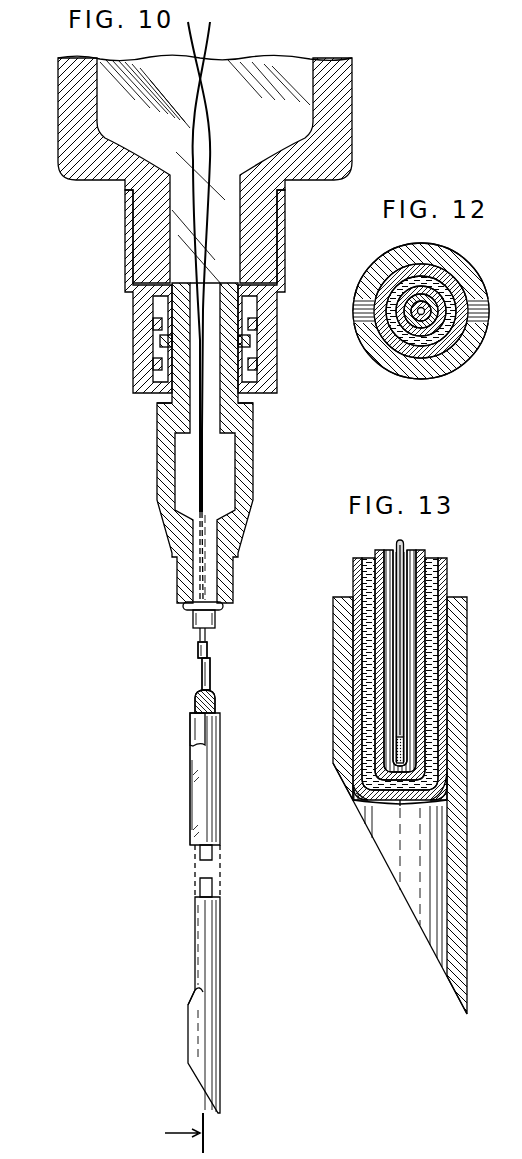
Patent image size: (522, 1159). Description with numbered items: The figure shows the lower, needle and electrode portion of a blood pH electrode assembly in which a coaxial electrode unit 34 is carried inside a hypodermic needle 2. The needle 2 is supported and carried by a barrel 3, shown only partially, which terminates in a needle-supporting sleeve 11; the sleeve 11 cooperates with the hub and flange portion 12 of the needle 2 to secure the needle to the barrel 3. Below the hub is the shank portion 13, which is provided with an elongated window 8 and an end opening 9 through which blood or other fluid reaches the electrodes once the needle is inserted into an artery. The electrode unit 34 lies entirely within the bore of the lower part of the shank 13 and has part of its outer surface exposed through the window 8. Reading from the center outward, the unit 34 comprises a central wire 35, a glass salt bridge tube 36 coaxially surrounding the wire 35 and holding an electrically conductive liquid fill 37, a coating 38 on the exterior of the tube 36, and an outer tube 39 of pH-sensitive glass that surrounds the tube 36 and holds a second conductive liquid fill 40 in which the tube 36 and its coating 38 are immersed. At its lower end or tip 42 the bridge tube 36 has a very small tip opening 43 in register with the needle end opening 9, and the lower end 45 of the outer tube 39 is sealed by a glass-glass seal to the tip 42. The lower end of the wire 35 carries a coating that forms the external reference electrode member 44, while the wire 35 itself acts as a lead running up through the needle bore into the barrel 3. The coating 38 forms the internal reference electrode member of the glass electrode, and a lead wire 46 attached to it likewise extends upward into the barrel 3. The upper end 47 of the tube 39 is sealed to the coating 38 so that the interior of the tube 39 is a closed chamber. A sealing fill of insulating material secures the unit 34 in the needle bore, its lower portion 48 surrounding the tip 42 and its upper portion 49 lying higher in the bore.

In FIG. 10, the hypodermic needle 2 is at (110, 610).
In FIG. 10, the barrel portion 3 is at (73, 111).
In FIG. 10, the window 8 is at (193, 796).
In FIG. 12, the window 8 is at (372, 330).
In FIG. 13, the end opening 9 is at (422, 918).
In FIG. 10, the needle-supporting sleeve 11 is at (133, 342).
In FIG. 10, the hub and flange portion 12 is at (178, 519).
In FIG. 10, the shank portion 13 is at (214, 796).
In FIG. 12, the shank portion 13 is at (457, 268).
In FIG. 13, the shank portion 13 is at (455, 722).
In FIG. 10, the coaxial electrode unit 34 is at (219, 684).
In FIG. 10, the central wire 35 is at (212, 35).
In FIG. 12, the central wire 35 is at (405, 326).
In FIG. 13, the central wire 35 is at (397, 543).
In FIG. 10, the glass tube 36 is at (210, 650).
In FIG. 12, the glass tube 36 is at (440, 331).
In FIG. 13, the glass tube 36 is at (416, 578).
In FIG. 12, the electrically conductive liquid fill 37 is at (421, 320).
In FIG. 13, the electrically conductive liquid fill 37 is at (406, 563).
In FIG. 10, the coating 38 is at (202, 675).
In FIG. 12, the coating 38 is at (463, 346).
In FIG. 13, the coating 38 is at (424, 590).
In FIG. 10, the outer glass tube 39 is at (196, 700).
In FIG. 12, the outer glass tube 39 is at (465, 300).
In FIG. 13, the outer glass tube 39 is at (443, 682).
In FIG. 12, the electrically conductive liquid fill 40 is at (458, 321).
In FIG. 13, the electrically conductive liquid fill 40 is at (432, 641).
In FIG. 13, the lower end or tip 42 is at (440, 803).
In FIG. 13, the tip opening 43 is at (400, 805).
In FIG. 13, the external reference electrode member 44 is at (396, 757).
In FIG. 13, the lower end of outer tube 45 is at (370, 802).
In FIG. 10, the lead wire 46 is at (186, 36).
In FIG. 10, the upper end of outer tube 47 is at (215, 698).
In FIG. 10, the lower fill portion 48 is at (194, 999).
In FIG. 13, the lower fill portion 48 is at (440, 791).
In FIG. 10, the upper fill portion 49 is at (192, 744).